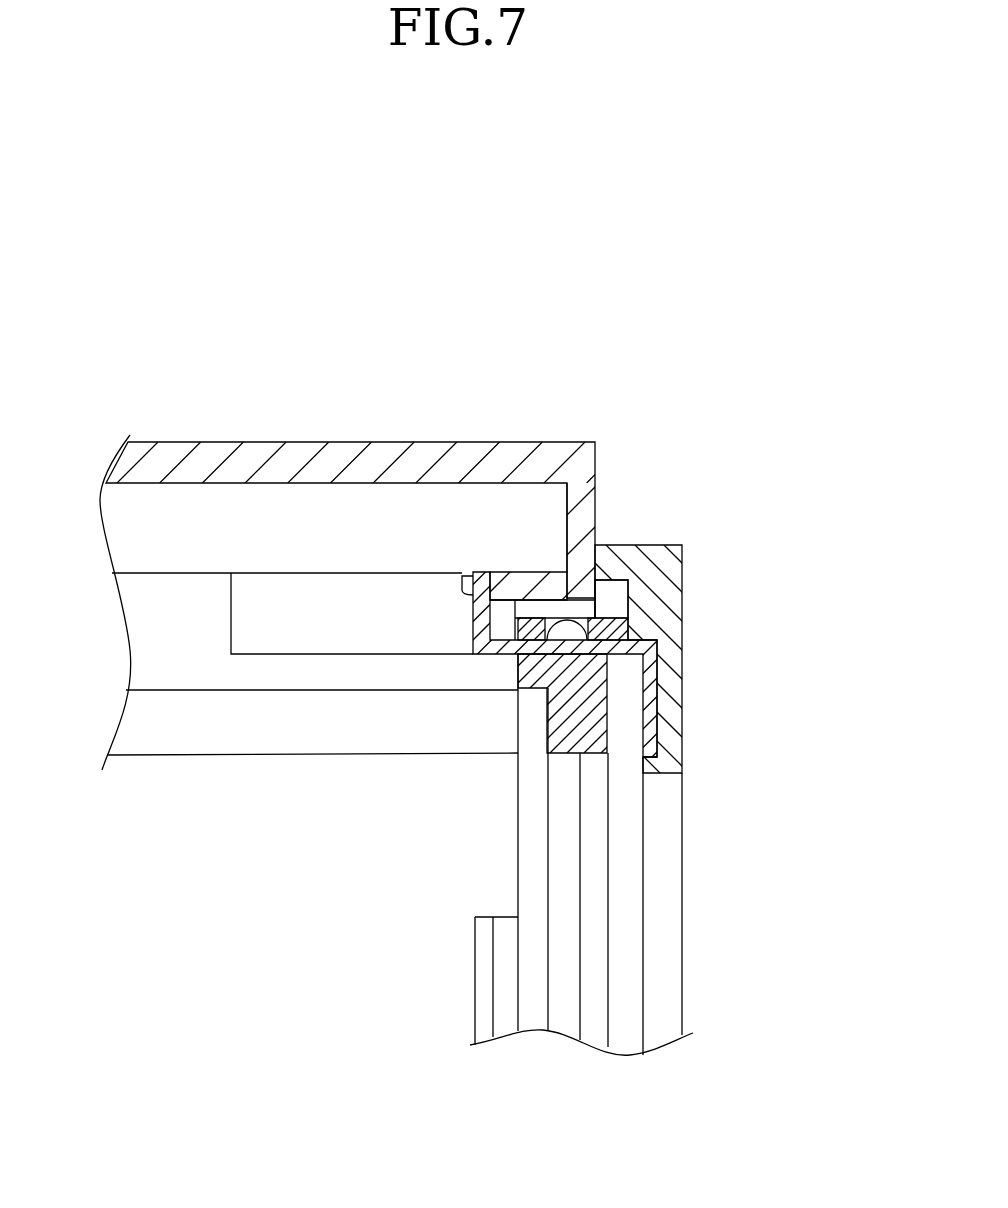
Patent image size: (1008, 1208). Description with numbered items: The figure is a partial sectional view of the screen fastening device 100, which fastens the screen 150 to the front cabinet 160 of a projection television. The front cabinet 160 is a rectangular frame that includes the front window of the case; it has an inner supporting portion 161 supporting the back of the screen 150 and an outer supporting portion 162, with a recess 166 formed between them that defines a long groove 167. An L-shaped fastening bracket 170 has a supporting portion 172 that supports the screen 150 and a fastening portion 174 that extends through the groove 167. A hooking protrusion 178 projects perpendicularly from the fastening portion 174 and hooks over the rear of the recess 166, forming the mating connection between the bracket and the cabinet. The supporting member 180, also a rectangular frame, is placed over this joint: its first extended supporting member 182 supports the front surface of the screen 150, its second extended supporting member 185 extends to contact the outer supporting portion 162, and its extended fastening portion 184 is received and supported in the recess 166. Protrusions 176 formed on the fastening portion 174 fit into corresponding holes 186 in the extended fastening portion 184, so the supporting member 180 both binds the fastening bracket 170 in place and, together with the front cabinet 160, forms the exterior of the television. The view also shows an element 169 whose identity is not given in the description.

The screen fastening device 100 is at (135, 139).
The screen 150 is at (632, 983).
The front cabinet 160 is at (345, 438).
The inner supporting portion 161 is at (595, 750).
The outer supporting portion 162 is at (580, 463).
The recess 166 is at (502, 599).
The groove 167 is at (550, 607).
The display panel 169 is at (240, 632).
The fastening bracket 170 is at (663, 678).
The supporting portion 172 is at (648, 773).
The fastening portion 174 is at (472, 656).
The protrusions 176 is at (563, 642).
The hooking protrusion 178 is at (458, 574).
The supporting member 180 is at (694, 616).
The first extended supporting member 182 is at (673, 730).
The extended fastening portion 184 is at (528, 628).
The second extended supporting member 185 is at (583, 626).
The holes 186 is at (593, 598).